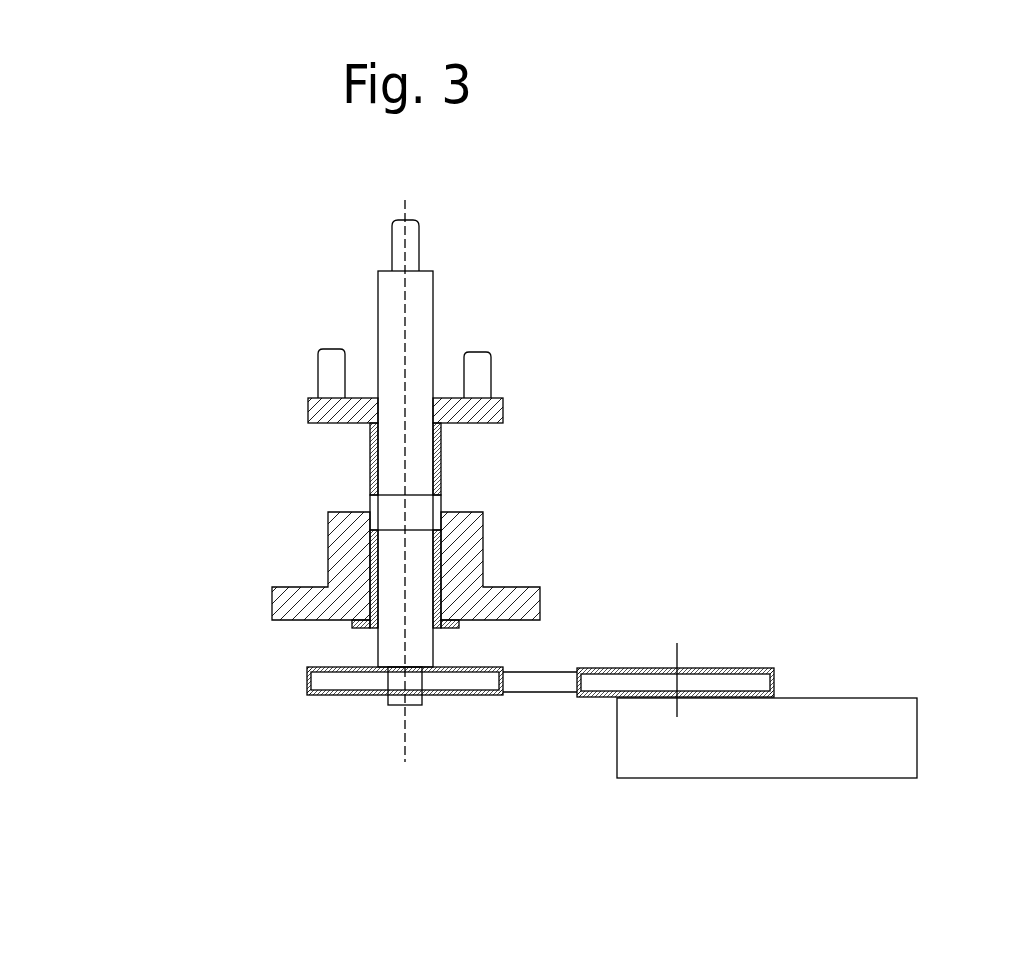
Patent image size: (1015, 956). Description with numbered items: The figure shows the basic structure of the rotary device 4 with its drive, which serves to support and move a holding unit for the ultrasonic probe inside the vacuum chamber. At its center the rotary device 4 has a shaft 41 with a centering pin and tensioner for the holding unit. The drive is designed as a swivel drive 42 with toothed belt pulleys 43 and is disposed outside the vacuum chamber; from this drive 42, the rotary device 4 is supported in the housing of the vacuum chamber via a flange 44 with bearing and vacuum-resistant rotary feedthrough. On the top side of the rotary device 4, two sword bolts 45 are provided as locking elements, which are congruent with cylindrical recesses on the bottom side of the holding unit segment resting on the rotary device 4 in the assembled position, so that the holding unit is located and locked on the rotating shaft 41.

The rotary device 4 is at (280, 272).
The shaft 41 is at (422, 320).
The swivel drive 42 is at (713, 708).
The toothed belt pulleys 43 is at (322, 678).
The flange 44 is at (470, 538).
The sword bolts 45 is at (337, 406).